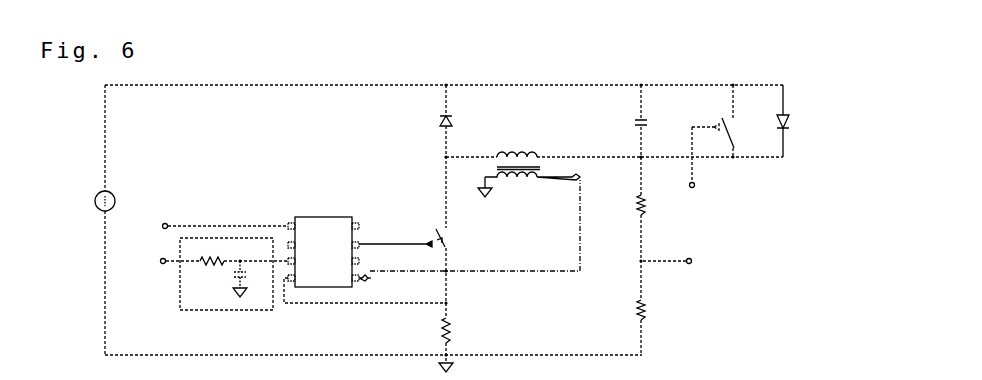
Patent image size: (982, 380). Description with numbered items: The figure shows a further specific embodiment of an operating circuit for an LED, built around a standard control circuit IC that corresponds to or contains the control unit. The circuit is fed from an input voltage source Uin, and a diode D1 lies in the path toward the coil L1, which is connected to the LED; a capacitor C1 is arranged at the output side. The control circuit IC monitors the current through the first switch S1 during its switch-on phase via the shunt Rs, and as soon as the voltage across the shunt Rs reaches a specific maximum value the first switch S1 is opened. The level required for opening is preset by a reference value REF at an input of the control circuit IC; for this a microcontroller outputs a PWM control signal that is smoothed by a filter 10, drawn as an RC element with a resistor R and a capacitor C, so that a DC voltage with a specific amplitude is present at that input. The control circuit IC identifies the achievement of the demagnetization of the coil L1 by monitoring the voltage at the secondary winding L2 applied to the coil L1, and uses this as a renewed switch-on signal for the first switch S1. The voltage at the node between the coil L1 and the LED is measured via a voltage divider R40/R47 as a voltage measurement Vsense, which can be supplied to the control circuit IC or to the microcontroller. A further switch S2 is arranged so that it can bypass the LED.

The filter 10 is at (234, 281).
The input voltage source Uin is at (95, 201).
The PWM control signal PWM is at (212, 226).
The reference input REF is at (168, 261).
The filter resistor R is at (212, 253).
The filter capacitor C is at (244, 279).
The control circuit IC is at (323, 252).
The first switch S1 is at (402, 234).
The diode D1 is at (453, 122).
The shunt Rs is at (453, 330).
The coil L1 is at (543, 149).
The secondary winding L2 is at (509, 182).
The output capacitor C1 is at (648, 121).
The voltage divider resistor R40 is at (652, 205).
The voltage divider resistor R47 is at (652, 310).
The voltage measurement Vsense is at (685, 260).
The further switch S2 is at (712, 122).
The element LED is at (795, 121).